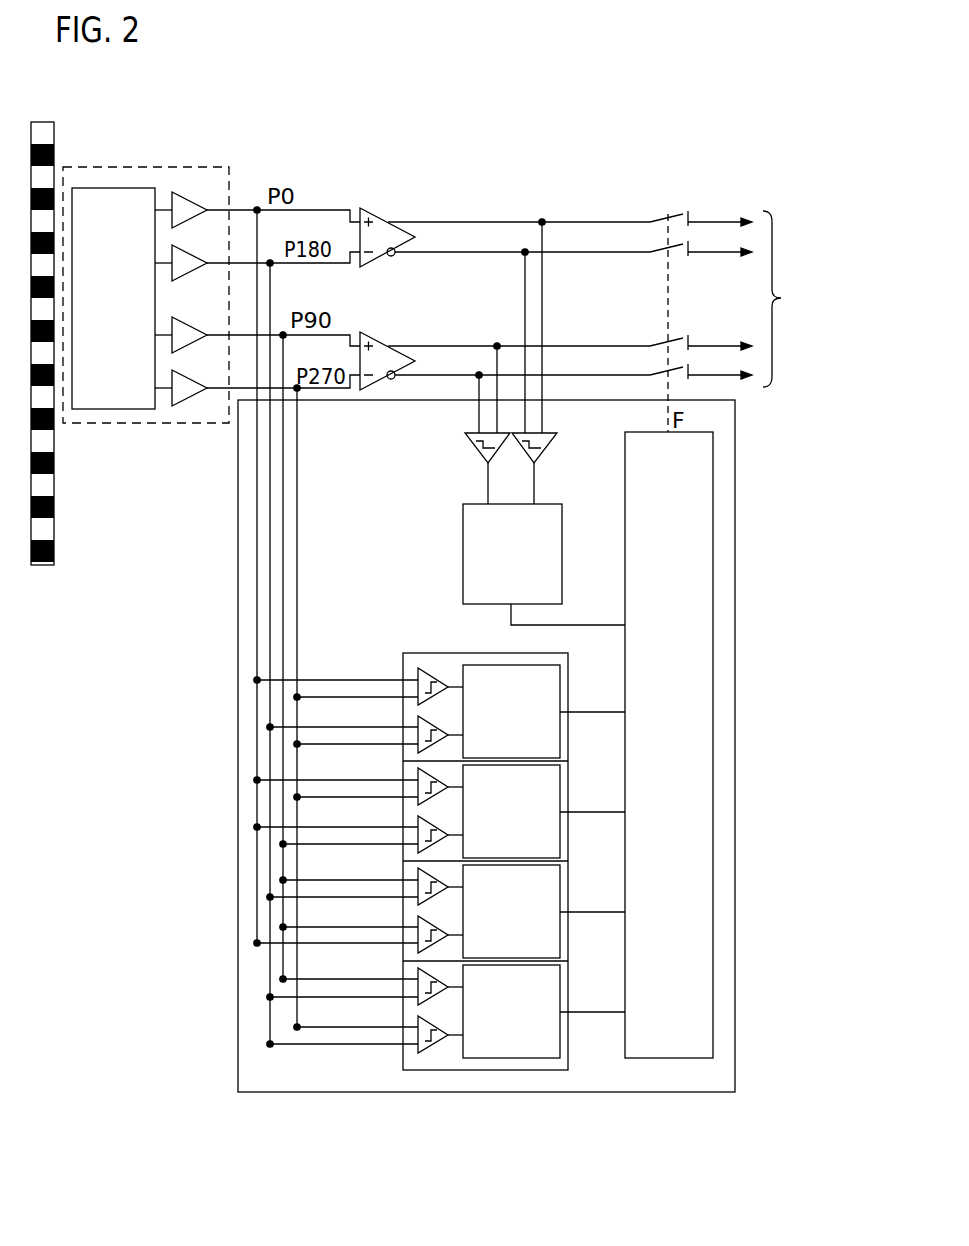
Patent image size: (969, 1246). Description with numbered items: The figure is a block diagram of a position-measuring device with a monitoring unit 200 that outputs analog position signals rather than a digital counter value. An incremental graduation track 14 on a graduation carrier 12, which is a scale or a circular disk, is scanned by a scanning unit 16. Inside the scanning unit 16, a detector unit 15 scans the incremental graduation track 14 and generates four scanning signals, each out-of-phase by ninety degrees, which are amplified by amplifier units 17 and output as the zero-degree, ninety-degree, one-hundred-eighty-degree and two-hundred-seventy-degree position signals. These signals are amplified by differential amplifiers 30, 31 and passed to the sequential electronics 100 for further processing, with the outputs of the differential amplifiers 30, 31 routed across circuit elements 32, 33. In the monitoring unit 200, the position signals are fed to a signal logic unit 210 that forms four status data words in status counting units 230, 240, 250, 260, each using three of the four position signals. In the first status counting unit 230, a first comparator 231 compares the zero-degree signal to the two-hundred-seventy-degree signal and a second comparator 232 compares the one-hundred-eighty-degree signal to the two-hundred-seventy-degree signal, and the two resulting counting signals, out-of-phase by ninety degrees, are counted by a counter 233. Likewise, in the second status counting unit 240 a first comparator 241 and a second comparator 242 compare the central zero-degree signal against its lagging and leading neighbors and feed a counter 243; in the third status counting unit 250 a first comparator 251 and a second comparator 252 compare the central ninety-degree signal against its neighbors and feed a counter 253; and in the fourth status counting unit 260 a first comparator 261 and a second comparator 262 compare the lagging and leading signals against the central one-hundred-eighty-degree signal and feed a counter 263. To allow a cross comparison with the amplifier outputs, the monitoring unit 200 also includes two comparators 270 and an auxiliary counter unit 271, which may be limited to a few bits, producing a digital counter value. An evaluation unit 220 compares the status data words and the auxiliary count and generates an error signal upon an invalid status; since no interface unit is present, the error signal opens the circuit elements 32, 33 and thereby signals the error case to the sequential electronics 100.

The graduation carrier 12 is at (82, 364).
The incremental graduation track 14 is at (44, 483).
The detector unit 15 is at (80, 402).
The scanning unit 16 is at (180, 324).
The amplifier units 17 is at (185, 396).
The differential amplifier 30 is at (383, 215).
The differential amplifier 31 is at (383, 340).
The circuit element 32 is at (683, 244).
The circuit element 33 is at (683, 367).
The sequential electronics 100 is at (792, 299).
The monitoring unit 200 is at (350, 1078).
The signal logic unit 210 is at (517, 1073).
The evaluation unit 220 is at (682, 1058).
The first status counting unit 230 is at (439, 703).
The first comparator 231 is at (417, 673).
The second comparator 232 is at (417, 723).
The counter 233 is at (557, 736).
The second status counting unit 240 is at (439, 803).
The first comparator 241 is at (417, 773).
The second comparator 242 is at (417, 823).
The counter 243 is at (557, 836).
The third status counting unit 250 is at (439, 903).
The first comparator 251 is at (417, 873).
The second comparator 252 is at (417, 923).
The counter 253 is at (557, 936).
The fourth status counting unit 260 is at (446, 1003).
The first comparator 261 is at (417, 973).
The second comparator 262 is at (417, 1023).
The counter 263 is at (557, 1036).
The comparators 270 is at (475, 450).
The auxiliary counter unit 271 is at (475, 553).